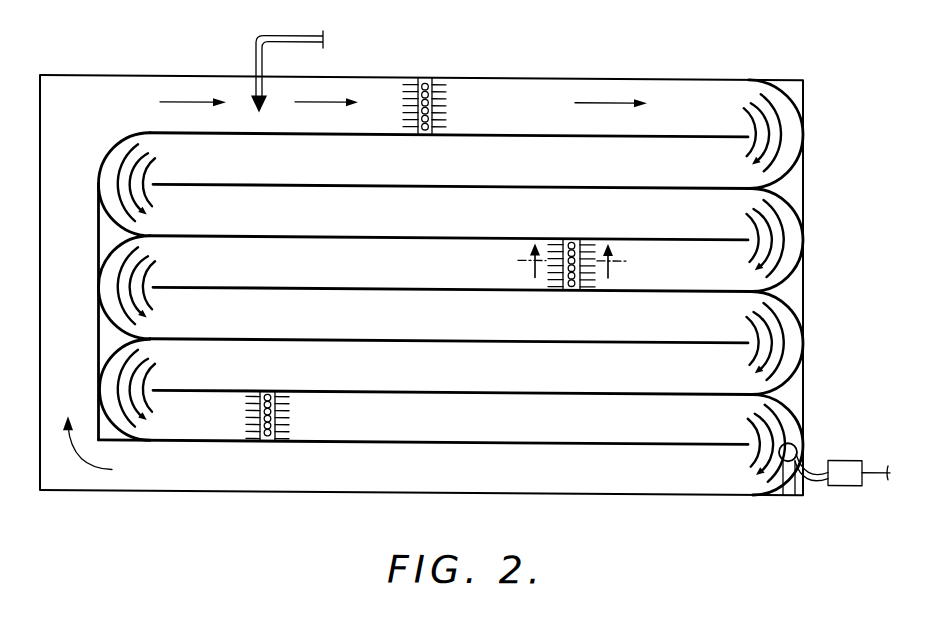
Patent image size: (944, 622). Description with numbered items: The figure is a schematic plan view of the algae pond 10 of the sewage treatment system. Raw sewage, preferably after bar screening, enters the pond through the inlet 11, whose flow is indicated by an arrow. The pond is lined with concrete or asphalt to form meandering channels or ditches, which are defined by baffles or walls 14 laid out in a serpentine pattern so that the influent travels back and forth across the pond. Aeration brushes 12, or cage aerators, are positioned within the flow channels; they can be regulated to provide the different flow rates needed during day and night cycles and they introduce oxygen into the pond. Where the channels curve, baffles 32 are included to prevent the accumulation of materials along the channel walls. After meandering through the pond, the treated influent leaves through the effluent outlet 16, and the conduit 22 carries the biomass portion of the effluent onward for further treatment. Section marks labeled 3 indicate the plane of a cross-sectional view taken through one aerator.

The algae pond 10 is at (176, 66).
The inlet 11 is at (271, 60).
The aeration brushes 12 is at (430, 76).
The baffles or walls 14 is at (505, 178).
The effluent outlet 16 is at (783, 480).
The conduit 22 is at (870, 455).
The baffles 32 is at (786, 109).
The section line 3- 3 is at (573, 265).